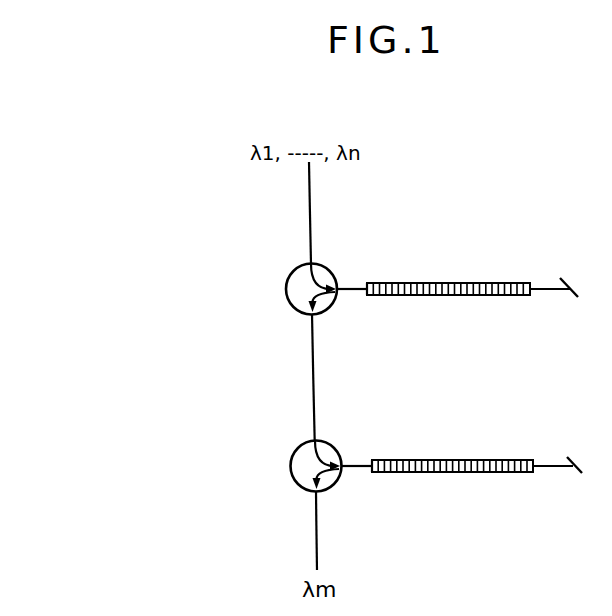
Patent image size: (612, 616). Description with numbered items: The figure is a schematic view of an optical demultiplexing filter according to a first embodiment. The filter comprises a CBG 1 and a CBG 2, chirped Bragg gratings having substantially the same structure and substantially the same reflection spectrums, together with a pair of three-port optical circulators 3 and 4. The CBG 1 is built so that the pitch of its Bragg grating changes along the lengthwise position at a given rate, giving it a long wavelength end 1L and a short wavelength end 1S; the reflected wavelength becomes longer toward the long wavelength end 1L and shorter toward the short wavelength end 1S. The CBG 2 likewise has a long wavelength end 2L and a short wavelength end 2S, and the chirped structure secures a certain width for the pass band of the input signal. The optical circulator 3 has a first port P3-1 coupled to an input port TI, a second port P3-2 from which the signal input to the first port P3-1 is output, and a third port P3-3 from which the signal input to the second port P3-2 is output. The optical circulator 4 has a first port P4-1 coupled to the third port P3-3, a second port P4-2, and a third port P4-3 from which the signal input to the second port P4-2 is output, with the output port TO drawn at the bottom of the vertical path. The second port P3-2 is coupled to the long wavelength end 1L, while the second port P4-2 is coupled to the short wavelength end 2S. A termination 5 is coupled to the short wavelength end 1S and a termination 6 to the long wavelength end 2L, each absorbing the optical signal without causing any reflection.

The CBG 1 is at (422, 283).
The CBG 2 is at (447, 460).
The optical circulator 3 is at (287, 287).
The optical circulator 4 is at (291, 462).
The termination 5 is at (570, 300).
The termination 6 is at (572, 478).
The long wavelength end 1L is at (366, 284).
The short wavelength end 1S is at (530, 284).
The short wavelength end 2S is at (370, 462).
The long wavelength end 2L is at (535, 461).
The first port P3-1 is at (308, 258).
The second port P3-2 is at (350, 293).
The third port P3-3 is at (311, 323).
The first port P4-1 is at (313, 437).
The second port P4-2 is at (347, 472).
The third port P4-3 is at (317, 498).
The input port TI is at (309, 165).
The output terminal TO is at (317, 568).